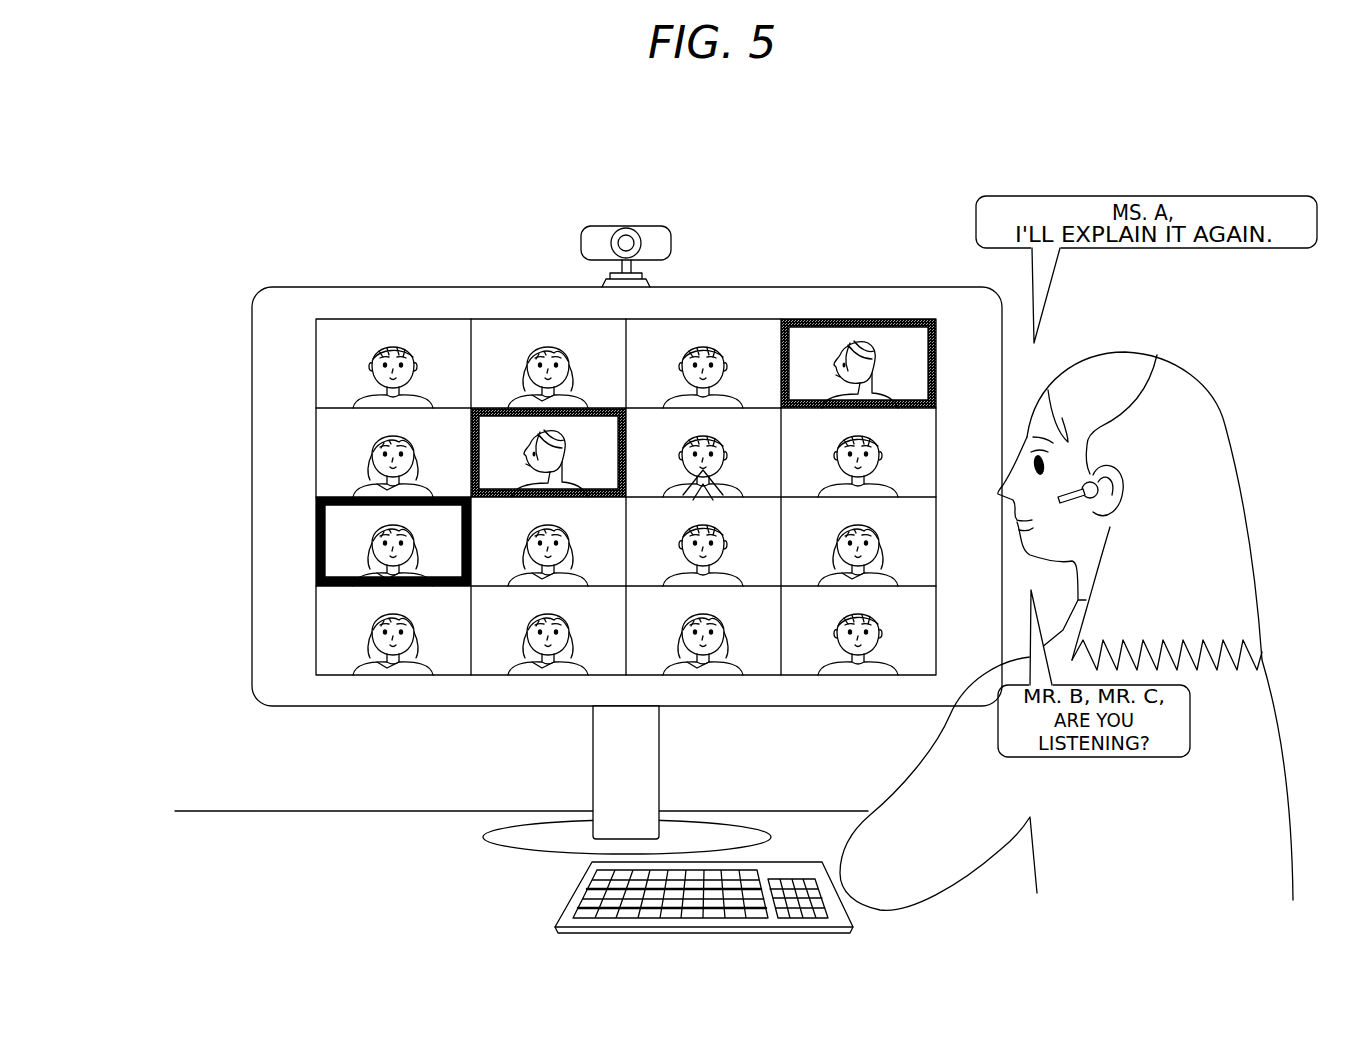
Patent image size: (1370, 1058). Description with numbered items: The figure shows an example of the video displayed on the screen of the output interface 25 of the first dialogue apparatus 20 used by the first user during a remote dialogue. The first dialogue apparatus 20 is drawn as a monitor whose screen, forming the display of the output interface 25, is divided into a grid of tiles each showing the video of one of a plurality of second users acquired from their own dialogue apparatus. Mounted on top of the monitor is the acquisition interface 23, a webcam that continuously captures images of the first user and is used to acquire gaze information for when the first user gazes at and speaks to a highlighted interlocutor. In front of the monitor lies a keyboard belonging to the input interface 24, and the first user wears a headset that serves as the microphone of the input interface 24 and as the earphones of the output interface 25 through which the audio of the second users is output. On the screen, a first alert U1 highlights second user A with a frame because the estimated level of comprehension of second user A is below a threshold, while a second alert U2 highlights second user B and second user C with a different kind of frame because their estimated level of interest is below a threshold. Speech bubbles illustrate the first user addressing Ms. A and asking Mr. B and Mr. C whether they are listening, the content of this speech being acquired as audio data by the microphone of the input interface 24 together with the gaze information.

The first dialogue apparatus 20 is at (336, 237).
The acquisition interface 23 is at (653, 226).
The input interface 24 is at (575, 892).
The output interface 25 is at (323, 370).
The first alert U1 is at (318, 540).
The second alert U2 is at (490, 410).
The second user A is at (393, 537).
The second user B is at (874, 346).
The second user C is at (562, 437).